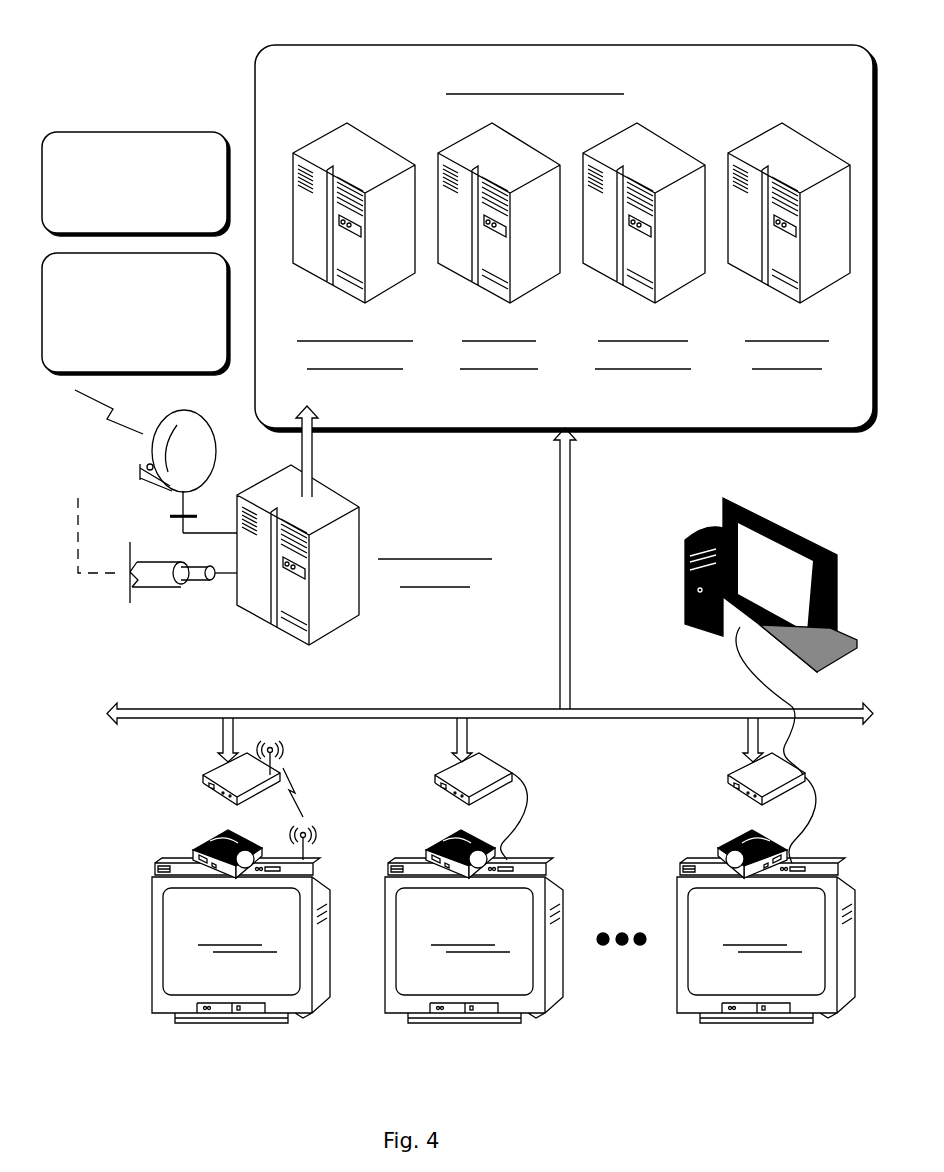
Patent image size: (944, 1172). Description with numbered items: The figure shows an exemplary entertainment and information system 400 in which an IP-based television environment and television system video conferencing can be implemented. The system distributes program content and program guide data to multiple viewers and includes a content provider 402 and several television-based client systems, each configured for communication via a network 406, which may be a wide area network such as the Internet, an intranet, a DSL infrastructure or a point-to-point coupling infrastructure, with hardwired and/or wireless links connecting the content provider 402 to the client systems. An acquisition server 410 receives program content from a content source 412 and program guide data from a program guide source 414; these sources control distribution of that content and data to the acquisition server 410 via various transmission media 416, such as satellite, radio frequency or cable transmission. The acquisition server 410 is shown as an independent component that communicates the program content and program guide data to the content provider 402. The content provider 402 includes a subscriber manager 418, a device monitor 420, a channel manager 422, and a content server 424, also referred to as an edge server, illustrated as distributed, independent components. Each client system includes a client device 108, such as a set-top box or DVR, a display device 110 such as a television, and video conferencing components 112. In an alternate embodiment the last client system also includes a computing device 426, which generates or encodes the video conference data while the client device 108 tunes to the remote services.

The entertainment and information system 400 is at (218, 78).
The content provider 402 is at (648, 94).
The network 406 is at (405, 708).
The acquisition server 410 is at (415, 614).
The content source 412 is at (114, 214).
The program guide source 414 is at (114, 356).
The transmission media 416 is at (152, 617).
The subscriber manager 418 is at (335, 397).
The device monitor 420 is at (479, 397).
The channel manager 422 is at (623, 397).
The content server 424 is at (767, 397).
The computing device 426 is at (703, 530).
The client device 108 is at (178, 860).
The display device 110 is at (150, 912).
The video conferencing component 112 is at (213, 835).